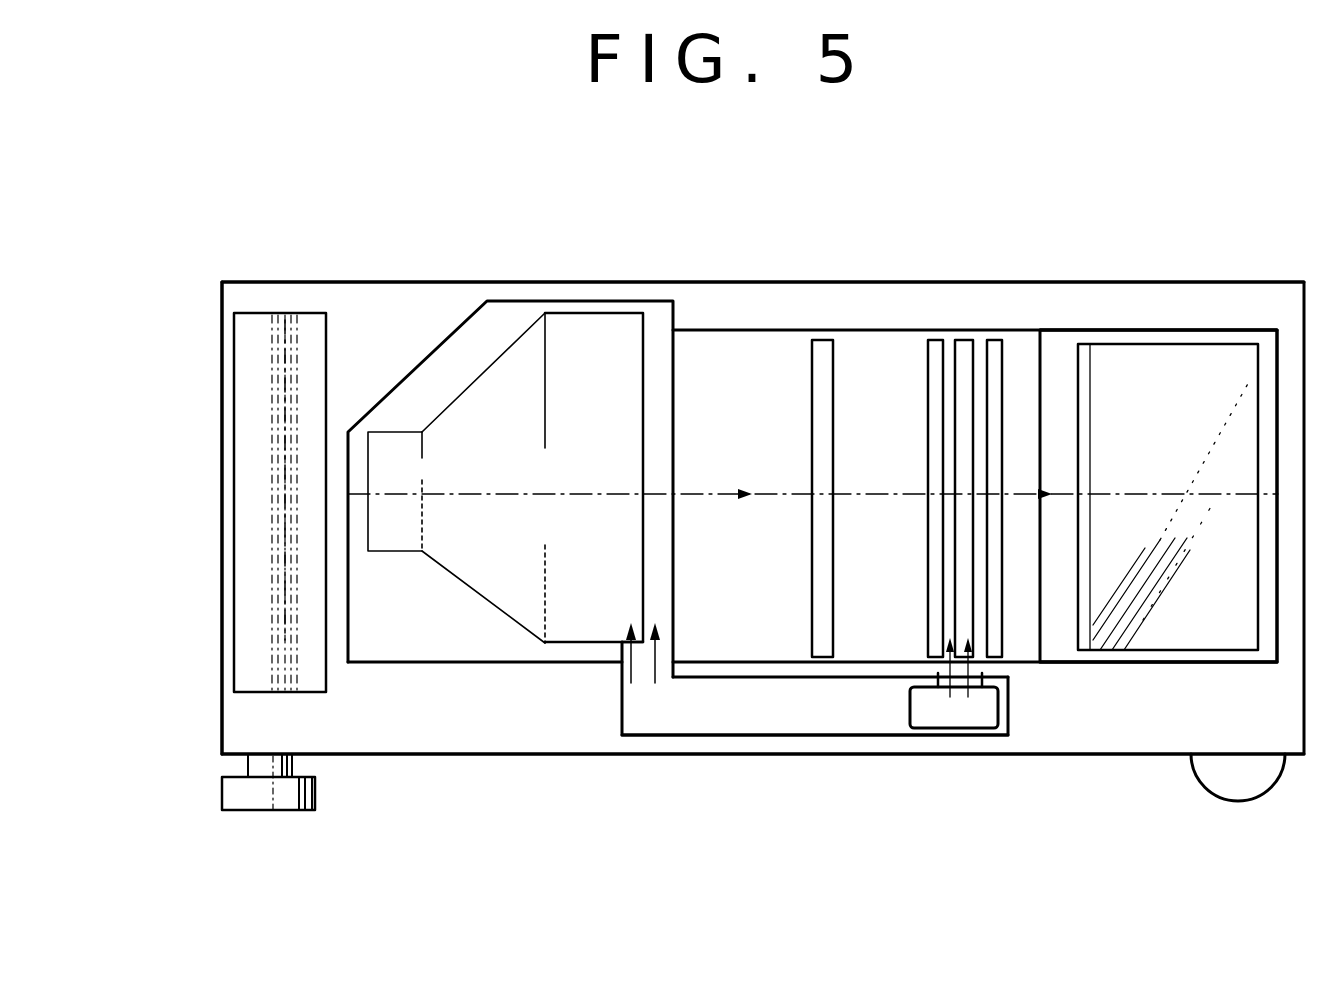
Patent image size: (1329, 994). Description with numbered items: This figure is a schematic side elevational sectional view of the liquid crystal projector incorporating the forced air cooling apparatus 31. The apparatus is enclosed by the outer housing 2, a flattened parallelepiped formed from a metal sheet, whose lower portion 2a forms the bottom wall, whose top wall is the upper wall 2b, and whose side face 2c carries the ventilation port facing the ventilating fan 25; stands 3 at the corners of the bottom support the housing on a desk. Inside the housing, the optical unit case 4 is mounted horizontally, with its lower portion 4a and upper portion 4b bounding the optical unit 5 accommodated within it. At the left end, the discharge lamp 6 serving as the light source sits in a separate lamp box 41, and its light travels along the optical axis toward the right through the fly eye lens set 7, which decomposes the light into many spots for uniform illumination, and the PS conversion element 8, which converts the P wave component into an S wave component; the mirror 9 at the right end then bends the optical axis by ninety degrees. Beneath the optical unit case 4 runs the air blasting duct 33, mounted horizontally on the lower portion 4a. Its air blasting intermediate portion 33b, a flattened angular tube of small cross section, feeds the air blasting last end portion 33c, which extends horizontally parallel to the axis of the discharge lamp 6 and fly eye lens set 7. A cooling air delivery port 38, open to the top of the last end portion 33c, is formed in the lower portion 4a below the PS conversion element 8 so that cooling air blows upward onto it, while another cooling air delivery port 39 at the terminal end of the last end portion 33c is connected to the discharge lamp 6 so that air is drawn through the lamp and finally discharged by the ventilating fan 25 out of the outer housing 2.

The outer housing 2 is at (280, 283).
The lower portion of the outer housing 2a is at (430, 755).
The top wall 2b is at (373, 281).
The side face of the outer housing 2c is at (222, 497).
The stands 3 is at (262, 800).
The optical unit case 4 is at (1053, 329).
The lower portion of the optical unit case 4a is at (1125, 664).
The upper portion of the optical unit case 4b is at (1172, 330).
The optical unit 5 is at (745, 345).
The discharge lamp 6 is at (512, 365).
The fly eye lens set 7 is at (930, 380).
The PS conversion element 8 is at (965, 345).
The mirror 9 is at (1220, 355).
The ventilating fan 25 is at (252, 422).
The forced air cooling apparatus 31 is at (284, 630).
The air blasting duct 33 is at (887, 736).
The air blasting intermediate portion 33b is at (957, 713).
The air blasting last end portion 33c is at (800, 737).
The cooling air delivery port 38 is at (962, 648).
The cooling air delivery port 39 is at (645, 680).
The lamp box 41 is at (490, 664).